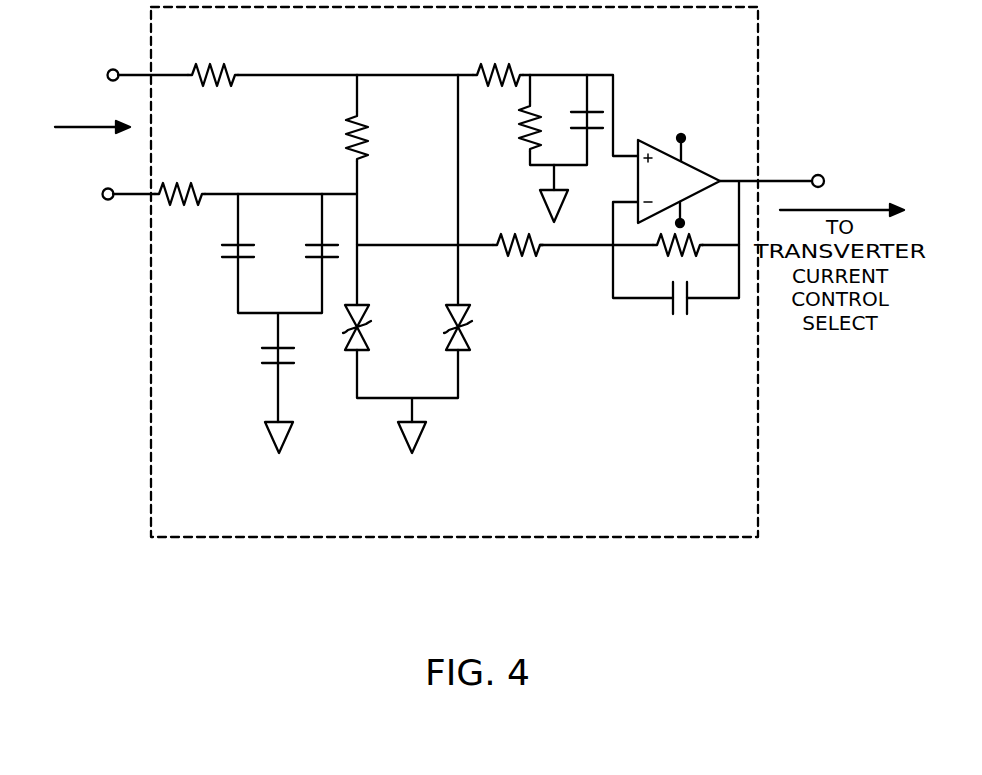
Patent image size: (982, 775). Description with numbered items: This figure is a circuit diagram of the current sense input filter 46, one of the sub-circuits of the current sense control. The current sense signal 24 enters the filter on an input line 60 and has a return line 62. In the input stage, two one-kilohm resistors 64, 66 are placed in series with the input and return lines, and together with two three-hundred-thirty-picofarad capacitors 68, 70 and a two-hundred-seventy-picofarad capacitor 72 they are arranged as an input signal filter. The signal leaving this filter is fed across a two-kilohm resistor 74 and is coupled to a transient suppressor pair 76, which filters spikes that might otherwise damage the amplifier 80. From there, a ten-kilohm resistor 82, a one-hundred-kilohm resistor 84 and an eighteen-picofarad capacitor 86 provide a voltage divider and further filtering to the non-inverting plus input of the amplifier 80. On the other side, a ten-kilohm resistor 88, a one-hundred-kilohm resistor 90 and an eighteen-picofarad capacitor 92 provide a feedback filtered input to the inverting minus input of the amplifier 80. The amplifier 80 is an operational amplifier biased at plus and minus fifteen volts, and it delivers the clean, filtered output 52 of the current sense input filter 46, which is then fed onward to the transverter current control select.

The current sense signal 24 is at (80, 125).
The current sense input filter 46 is at (759, 456).
The output 52 is at (775, 181).
The input line 60 is at (130, 74).
The return line 62 is at (138, 196).
The resistor 64 is at (225, 73).
The resistor 66 is at (197, 190).
The capacitor 68 is at (225, 250).
The capacitor 70 is at (305, 250).
The capacitor 72 is at (260, 357).
The resistor 74 is at (370, 124).
The transient suppressor pair 76 is at (409, 333).
The amplifier 80 is at (655, 146).
The resistor 82 is at (507, 67).
The resistor 84 is at (519, 124).
The capacitor 86 is at (572, 119).
The resistor 88 is at (523, 250).
The resistor 90 is at (680, 258).
The capacitor 92 is at (683, 314).